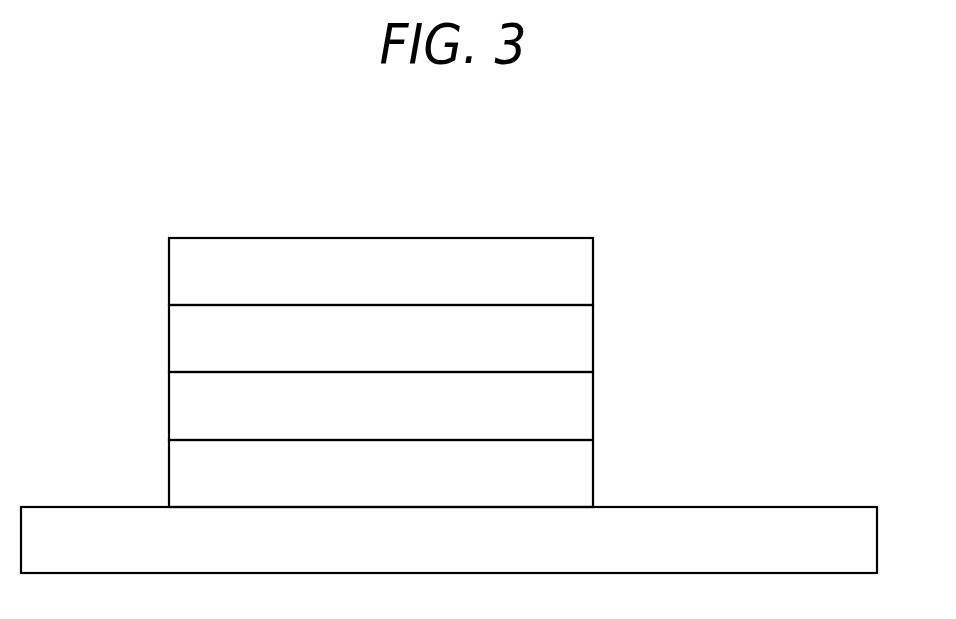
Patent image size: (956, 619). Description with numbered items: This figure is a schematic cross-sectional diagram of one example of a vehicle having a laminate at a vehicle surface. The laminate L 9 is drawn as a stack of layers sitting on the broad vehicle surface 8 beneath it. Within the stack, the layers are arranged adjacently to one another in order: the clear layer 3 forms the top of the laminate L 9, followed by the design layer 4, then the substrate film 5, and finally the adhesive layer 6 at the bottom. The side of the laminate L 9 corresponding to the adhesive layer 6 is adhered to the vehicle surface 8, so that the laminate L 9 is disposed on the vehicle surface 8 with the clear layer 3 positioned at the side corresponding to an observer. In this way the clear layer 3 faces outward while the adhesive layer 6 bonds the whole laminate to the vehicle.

The clear layer 3 is at (572, 268).
The design layer 4 is at (572, 340).
The substrate film 5 is at (572, 415).
The adhesive layer 6 is at (572, 487).
The vehicle surface 8 is at (762, 533).
The laminate L 9 is at (415, 321).